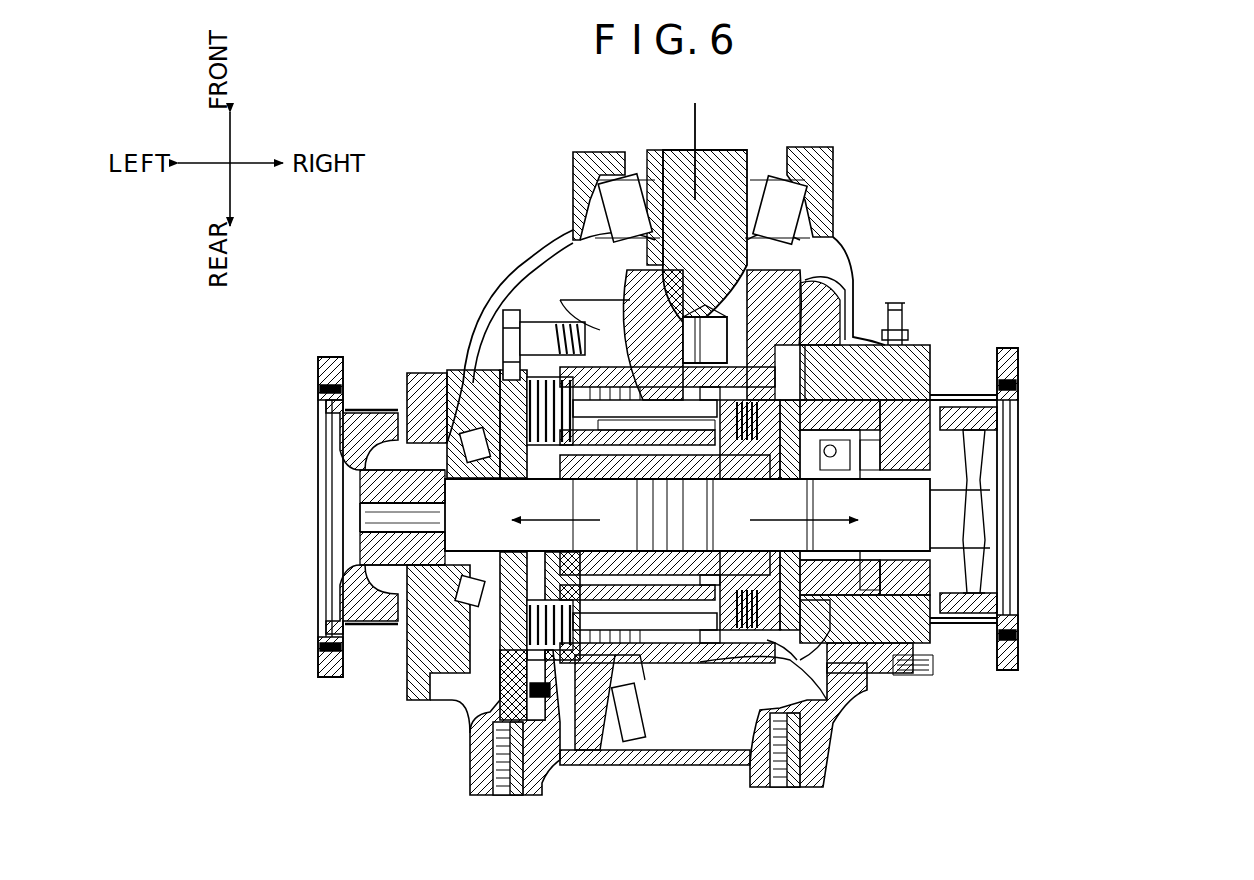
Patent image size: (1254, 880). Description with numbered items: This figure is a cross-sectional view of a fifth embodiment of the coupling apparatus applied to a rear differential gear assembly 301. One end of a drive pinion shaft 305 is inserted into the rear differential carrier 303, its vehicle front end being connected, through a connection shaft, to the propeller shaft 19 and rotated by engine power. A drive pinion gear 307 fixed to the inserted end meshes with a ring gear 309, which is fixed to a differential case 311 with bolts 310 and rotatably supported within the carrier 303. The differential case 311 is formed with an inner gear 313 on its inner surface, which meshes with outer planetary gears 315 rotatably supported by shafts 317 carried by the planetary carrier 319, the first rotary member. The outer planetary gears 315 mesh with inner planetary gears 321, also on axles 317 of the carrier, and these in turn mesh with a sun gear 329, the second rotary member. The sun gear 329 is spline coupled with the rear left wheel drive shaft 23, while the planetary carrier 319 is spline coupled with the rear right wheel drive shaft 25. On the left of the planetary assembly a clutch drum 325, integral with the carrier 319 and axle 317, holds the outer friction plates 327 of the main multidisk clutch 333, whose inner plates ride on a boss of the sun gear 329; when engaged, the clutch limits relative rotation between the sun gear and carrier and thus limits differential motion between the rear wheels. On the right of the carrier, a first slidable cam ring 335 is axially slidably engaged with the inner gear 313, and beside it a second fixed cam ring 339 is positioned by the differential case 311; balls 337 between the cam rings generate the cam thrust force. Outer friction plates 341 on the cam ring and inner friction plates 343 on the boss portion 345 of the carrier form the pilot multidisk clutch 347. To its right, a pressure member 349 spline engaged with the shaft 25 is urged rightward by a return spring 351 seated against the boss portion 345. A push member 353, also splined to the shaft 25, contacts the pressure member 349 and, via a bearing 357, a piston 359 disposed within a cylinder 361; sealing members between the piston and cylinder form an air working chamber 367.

The propeller shaft 19 is at (726, 136).
The rear left wheel drive shaft 23 is at (322, 565).
The rear right wheel drive shaft 25 is at (903, 540).
The rear differential gear assembly 301 is at (478, 237).
The rear differential carrier 303 is at (835, 212).
The drive pinion shaft 305 is at (723, 237).
The drive pinion gear 307 is at (800, 285).
The ring gear 309 is at (643, 327).
The bolts 310 is at (516, 343).
The differential case 311 is at (515, 298).
The inner gear 313 is at (663, 657).
The outer planetary gears 315 is at (640, 425).
The shafts 317 is at (690, 318).
The planetary carrier 319 is at (797, 703).
The inner planetary gears 321 is at (600, 690).
The clutch drum 325 is at (580, 740).
The outer friction plates 327 is at (478, 395).
The sun gear 329 is at (702, 800).
The main multidisk clutch 333 is at (512, 430).
The first slidable cam ring 335 is at (835, 238).
The balls 337 is at (818, 305).
The second fixed cam ring 339 is at (808, 366).
The outer friction plates 341 is at (830, 462).
The inner friction plates 343 is at (712, 472).
The boss portion 345 is at (742, 637).
The pilot multidisk clutch 347 is at (903, 343).
The pressure member 349 is at (832, 688).
The return spring 351 is at (760, 455).
The push member 353 is at (887, 477).
The bearing 357 is at (920, 407).
The piston 359 is at (953, 453).
The cylinder 361 is at (940, 400).
The air working chamber 367 is at (935, 620).